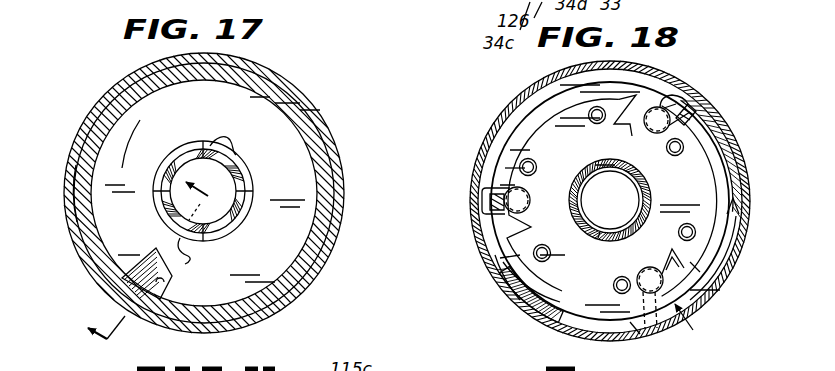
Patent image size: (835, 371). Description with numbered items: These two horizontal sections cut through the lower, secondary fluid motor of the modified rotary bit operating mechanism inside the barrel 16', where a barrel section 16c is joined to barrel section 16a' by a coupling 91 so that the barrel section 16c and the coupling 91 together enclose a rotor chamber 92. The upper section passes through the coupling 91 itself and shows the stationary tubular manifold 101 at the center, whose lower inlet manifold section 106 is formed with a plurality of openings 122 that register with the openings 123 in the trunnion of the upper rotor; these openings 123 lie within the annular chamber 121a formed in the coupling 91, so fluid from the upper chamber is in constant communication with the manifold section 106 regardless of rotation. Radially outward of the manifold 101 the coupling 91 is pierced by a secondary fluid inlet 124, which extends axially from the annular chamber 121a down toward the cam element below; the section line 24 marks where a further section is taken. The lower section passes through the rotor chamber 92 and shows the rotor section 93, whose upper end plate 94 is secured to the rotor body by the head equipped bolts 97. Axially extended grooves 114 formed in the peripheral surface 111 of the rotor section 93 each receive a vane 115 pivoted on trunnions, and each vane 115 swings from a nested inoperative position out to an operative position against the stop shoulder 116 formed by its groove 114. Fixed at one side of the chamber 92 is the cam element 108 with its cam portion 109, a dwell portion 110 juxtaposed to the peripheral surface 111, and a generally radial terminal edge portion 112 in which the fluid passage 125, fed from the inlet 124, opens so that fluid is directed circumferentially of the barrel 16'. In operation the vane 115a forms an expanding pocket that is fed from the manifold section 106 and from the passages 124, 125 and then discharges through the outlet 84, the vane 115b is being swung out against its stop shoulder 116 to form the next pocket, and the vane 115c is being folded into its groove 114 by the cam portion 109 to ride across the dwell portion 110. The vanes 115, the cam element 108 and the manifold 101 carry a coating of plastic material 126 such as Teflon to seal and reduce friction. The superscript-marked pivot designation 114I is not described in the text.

In FIG. 17, the barrel 16' is at (211, 187).
In FIG. 18, the barrel 16' is at (584, 201).
In FIG. 17, the barrel section 16a' is at (238, 193).
In FIG. 18, the barrel section 16c is at (508, 297).
In FIG. 17, the annular chamber 121a is at (122, 168).
In FIG. 17, the coupling 91 is at (78, 196).
In FIG. 17, the plastic coating material 126 is at (246, 184).
In FIG. 18, the plastic coating material 126 is at (614, 163).
In FIG. 17, the tubular manifold 101 is at (162, 208).
In FIG. 18, the tubular manifold 101 is at (575, 205).
In FIG. 17, the lower inlet manifold section 106 is at (166, 216).
In FIG. 18, the lower inlet manifold section 106 is at (600, 238).
In FIG. 17, the openings 122 is at (178, 167).
In FIG. 17, the openings 123 is at (196, 147).
In FIG. 17, the secondary fluid inlet 124 is at (167, 283).
In FIG. 17, the section line 24 is at (162, 272).
In FIG. 18, the rotor chamber 92 is at (526, 114).
In FIG. 18, the rotor section 93 is at (514, 140).
In FIG. 18, the upper end plate 94 is at (553, 120).
In FIG. 18, the peripheral surface 111 is at (510, 167).
In FIG. 18, the terminal edge portion 112 is at (500, 258).
In FIG. 18, the outlet 84 is at (737, 162).
In FIG. 18, the cam portion 109 is at (737, 210).
In FIG. 18, the fluid passage 125 is at (540, 305).
In FIG. 18, the head equipped bolts 97 is at (596, 121).
In FIG. 18, the grooves 114 is at (658, 134).
In FIG. 18, the pivot pins 114I is at (672, 150).
In FIG. 18, the vanes 115 is at (486, 192).
In FIG. 18, the vane 115a is at (480, 207).
In FIG. 18, the vane 115b is at (700, 266).
In FIG. 18, the vane 115c is at (668, 110).
In FIG. 18, the stop shoulder 116 is at (702, 116).
In FIG. 18, the cam element 108 is at (701, 327).
In FIG. 18, the dwell portion 110 is at (636, 341).